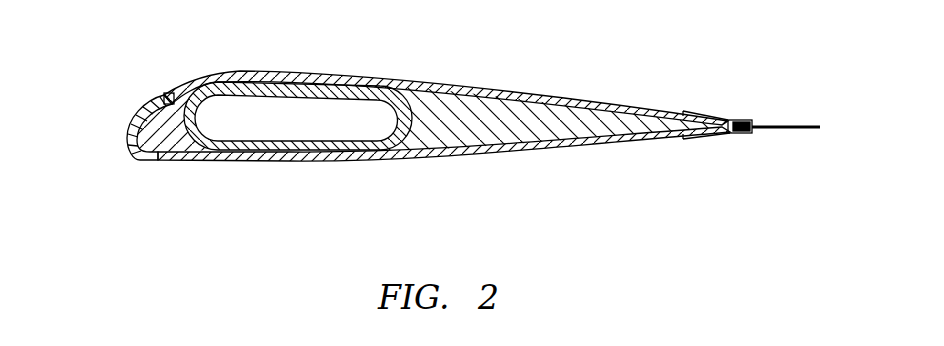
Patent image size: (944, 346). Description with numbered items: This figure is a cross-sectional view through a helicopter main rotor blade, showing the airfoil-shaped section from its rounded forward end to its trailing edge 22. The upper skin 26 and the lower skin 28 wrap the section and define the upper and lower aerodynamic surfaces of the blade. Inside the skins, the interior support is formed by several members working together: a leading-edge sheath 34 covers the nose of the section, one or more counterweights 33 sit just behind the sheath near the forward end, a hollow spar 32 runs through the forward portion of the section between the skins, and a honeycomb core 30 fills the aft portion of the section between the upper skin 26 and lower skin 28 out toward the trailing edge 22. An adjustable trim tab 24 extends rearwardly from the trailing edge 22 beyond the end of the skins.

The trailing edge 22 is at (745, 134).
The adjustable trim tab 24 is at (757, 114).
The upper skin 26 is at (455, 78).
The lower skin 28 is at (434, 160).
The honeycomb core 30 is at (569, 110).
The spar 32 is at (394, 79).
The counterweight 33 is at (162, 102).
The leading-edge sheath 34 is at (131, 147).